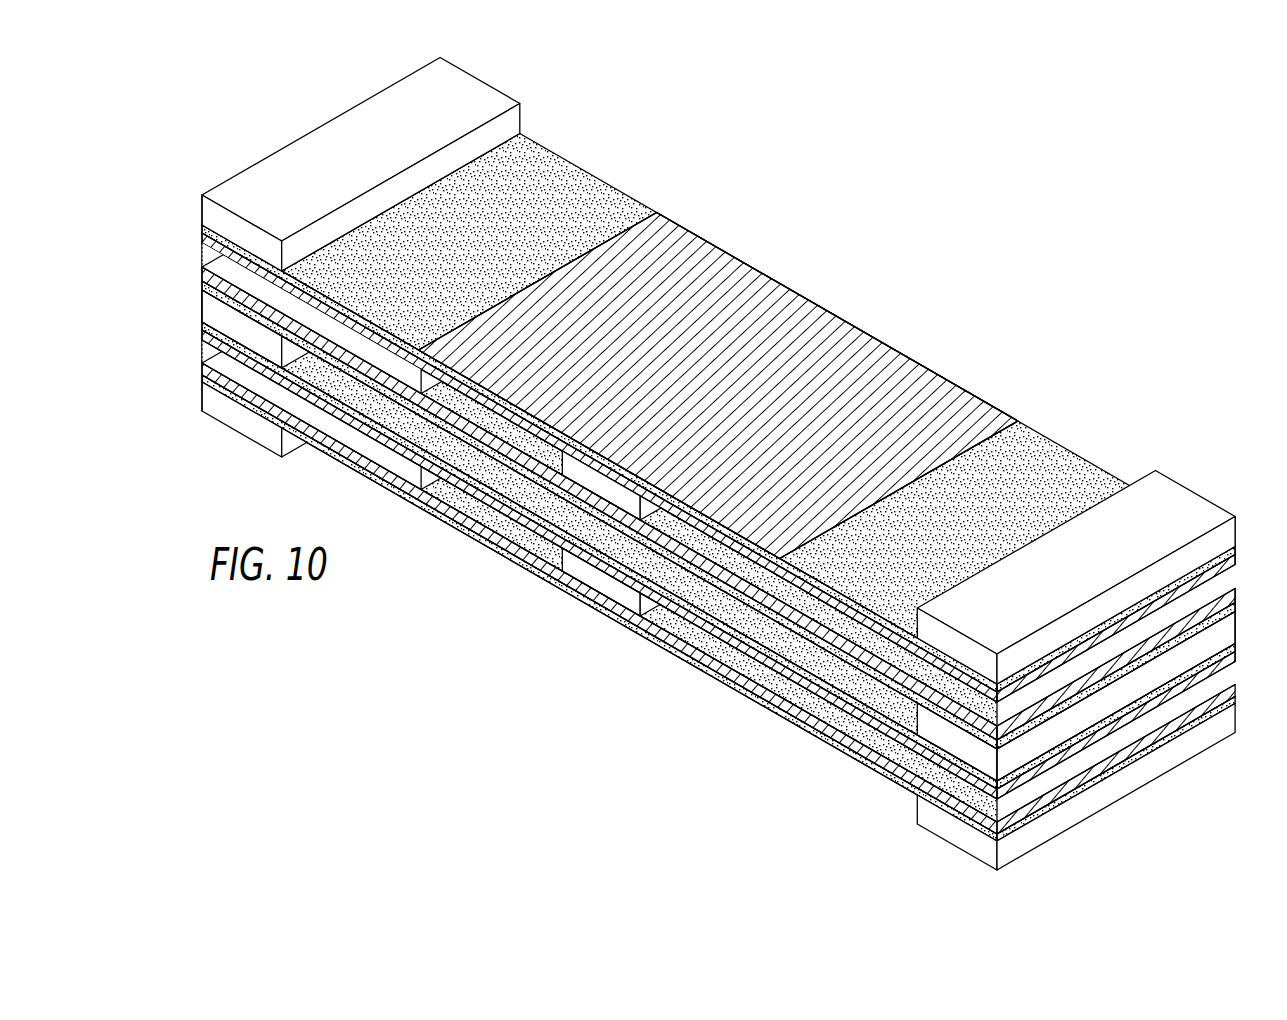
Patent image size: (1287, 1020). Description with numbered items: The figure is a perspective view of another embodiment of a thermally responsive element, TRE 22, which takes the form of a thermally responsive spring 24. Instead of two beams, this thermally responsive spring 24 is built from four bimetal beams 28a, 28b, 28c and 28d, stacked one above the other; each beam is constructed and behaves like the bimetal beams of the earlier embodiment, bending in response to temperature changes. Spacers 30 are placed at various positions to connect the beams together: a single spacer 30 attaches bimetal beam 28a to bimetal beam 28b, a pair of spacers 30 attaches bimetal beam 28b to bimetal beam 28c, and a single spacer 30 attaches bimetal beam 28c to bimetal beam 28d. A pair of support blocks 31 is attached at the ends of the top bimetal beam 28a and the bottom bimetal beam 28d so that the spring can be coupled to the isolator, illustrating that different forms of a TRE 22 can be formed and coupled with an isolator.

The TRE 22 is at (975, 322).
The thermally responsive spring 24 is at (1012, 422).
The bimetal beam 28a is at (202, 225).
The bimetal beam 28b is at (202, 283).
The bimetal beam 28c is at (202, 322).
The bimetal beam 28d is at (202, 380).
The spacer 30 is at (572, 478).
The support block 31 is at (475, 118).